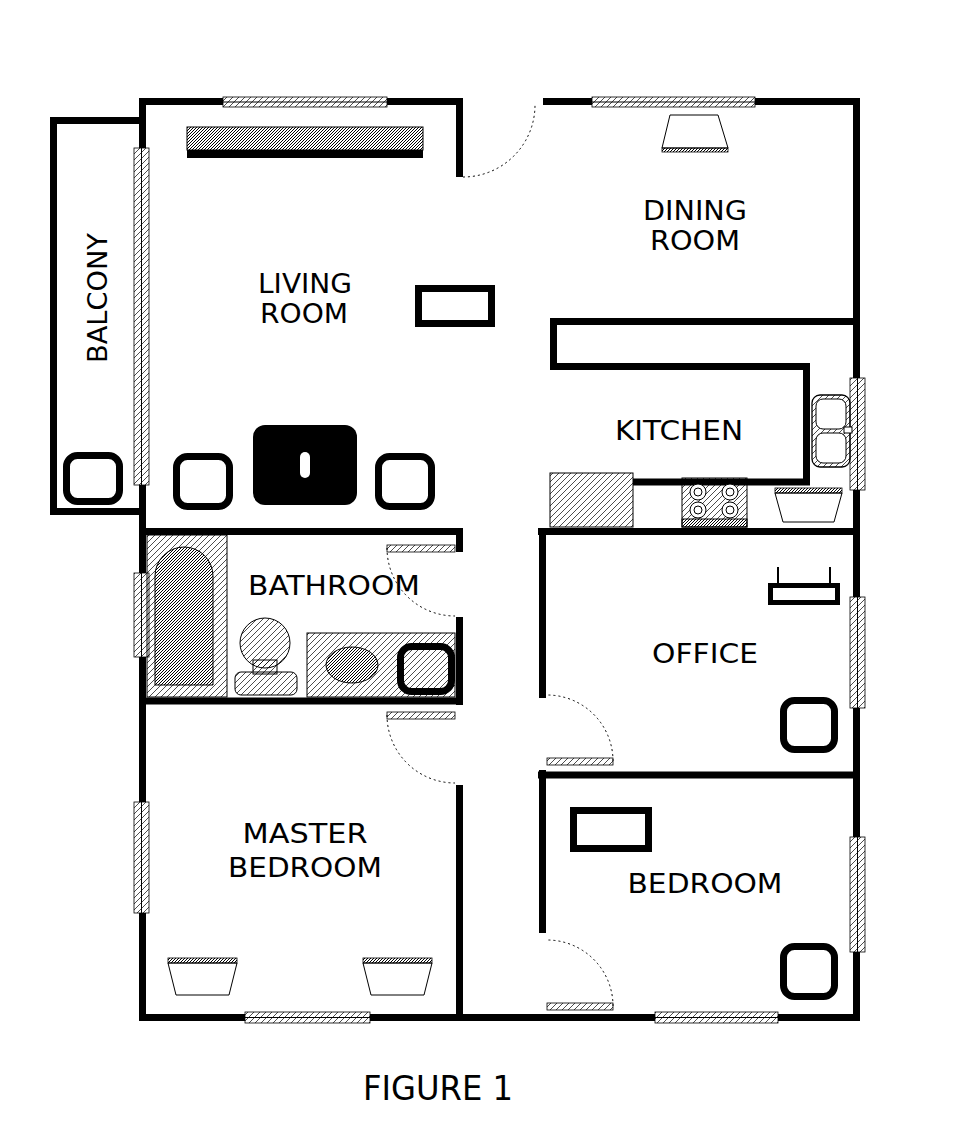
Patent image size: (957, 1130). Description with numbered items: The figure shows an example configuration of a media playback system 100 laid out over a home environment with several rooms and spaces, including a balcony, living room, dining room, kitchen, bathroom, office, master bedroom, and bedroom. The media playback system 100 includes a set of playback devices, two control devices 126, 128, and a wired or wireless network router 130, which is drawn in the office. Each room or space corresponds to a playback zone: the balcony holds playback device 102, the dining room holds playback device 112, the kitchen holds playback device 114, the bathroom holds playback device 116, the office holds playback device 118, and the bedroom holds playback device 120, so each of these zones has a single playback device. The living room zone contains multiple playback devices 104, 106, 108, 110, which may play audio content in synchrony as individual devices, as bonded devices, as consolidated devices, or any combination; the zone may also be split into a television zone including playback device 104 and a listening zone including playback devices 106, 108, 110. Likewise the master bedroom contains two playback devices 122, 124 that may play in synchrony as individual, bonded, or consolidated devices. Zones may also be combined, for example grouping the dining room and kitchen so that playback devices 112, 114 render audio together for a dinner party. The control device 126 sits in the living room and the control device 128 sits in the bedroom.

The media playback system 100 is at (547, 64).
The playback device 102 is at (74, 491).
The playback device 104 is at (291, 150).
The playback device 106 is at (184, 494).
The playback device 108 is at (386, 494).
The playback device 110 is at (291, 451).
The playback device 112 is at (676, 147).
The playback device 114 is at (789, 521).
The playback device 116 is at (407, 681).
The playback device 118 is at (790, 736).
The playback device 120 is at (790, 984).
The playback device 122 is at (184, 993).
The playback device 124 is at (379, 993).
The control device 126 is at (436, 317).
The control device 128 is at (592, 842).
The network router 130 is at (765, 596).